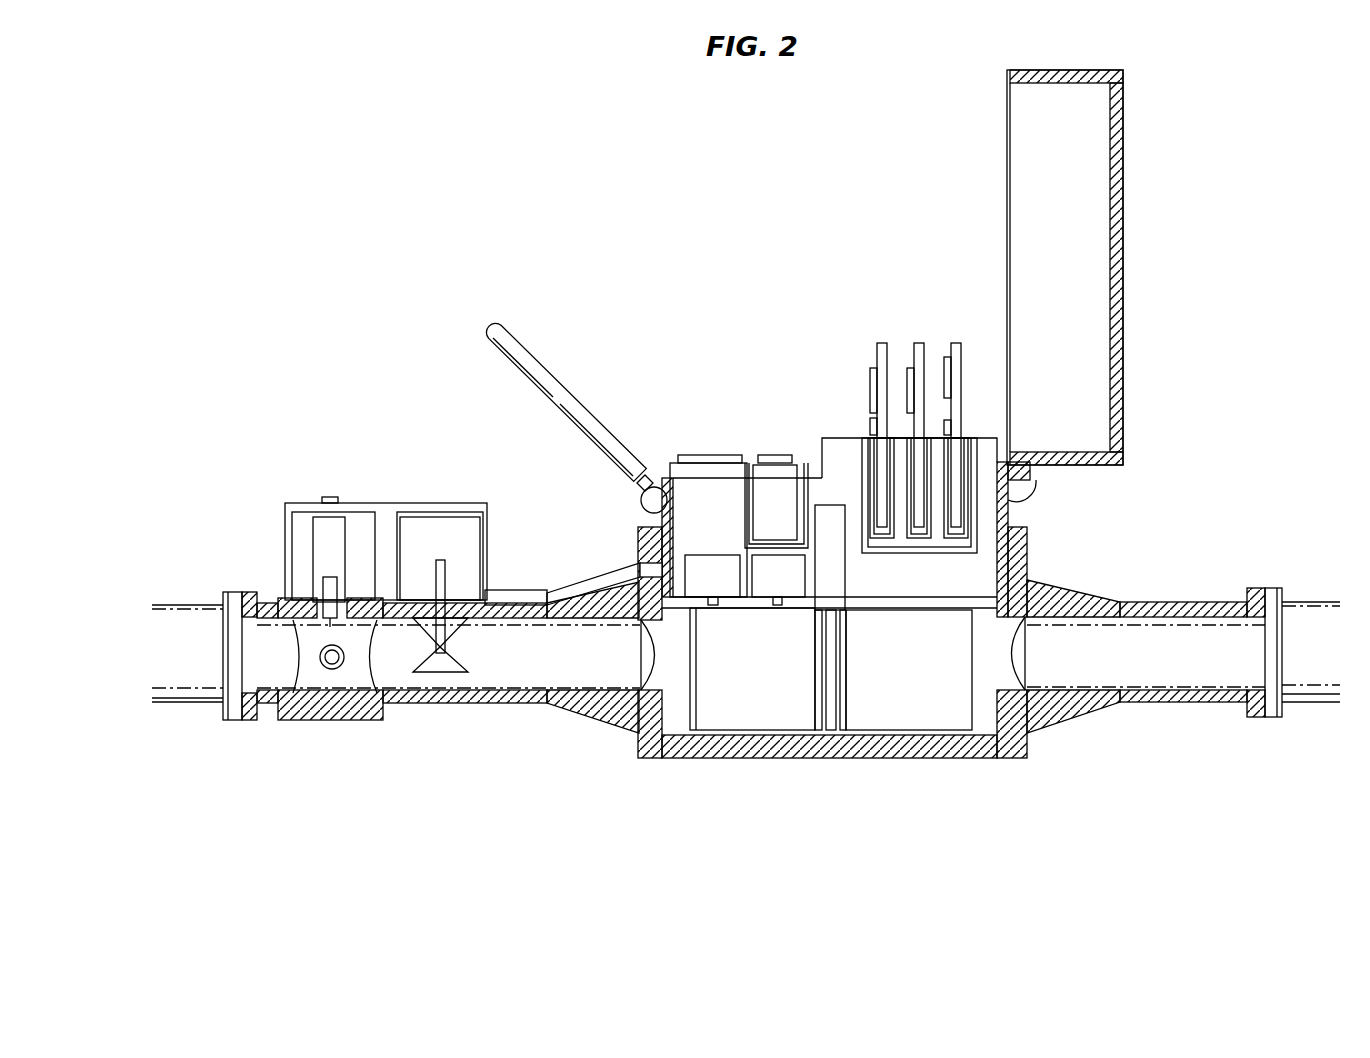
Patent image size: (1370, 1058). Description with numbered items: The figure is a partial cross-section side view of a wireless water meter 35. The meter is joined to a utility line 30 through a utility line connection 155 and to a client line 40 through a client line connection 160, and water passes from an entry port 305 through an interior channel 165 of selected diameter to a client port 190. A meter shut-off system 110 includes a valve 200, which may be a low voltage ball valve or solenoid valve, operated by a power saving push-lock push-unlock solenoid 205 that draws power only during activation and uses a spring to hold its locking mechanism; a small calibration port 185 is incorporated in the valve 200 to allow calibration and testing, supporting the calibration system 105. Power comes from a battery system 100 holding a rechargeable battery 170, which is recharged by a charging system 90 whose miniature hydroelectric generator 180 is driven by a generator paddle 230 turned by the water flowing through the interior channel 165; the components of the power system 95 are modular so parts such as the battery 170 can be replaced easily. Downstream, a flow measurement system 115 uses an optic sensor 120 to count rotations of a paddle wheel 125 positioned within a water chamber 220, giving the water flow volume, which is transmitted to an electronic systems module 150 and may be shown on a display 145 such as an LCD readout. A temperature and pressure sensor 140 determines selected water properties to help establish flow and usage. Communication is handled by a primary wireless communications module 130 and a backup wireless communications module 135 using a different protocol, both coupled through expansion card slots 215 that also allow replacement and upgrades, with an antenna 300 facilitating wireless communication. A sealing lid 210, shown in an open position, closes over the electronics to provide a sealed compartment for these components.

The utility line 30 is at (178, 605).
The wireless water meter 35 is at (652, 240).
The client line 40 is at (1315, 602).
The charging system 90 is at (370, 495).
The power system 95 is at (407, 495).
The battery system 100 is at (752, 452).
The calibration system 105 is at (871, 337).
The meter shut-off system 110 is at (876, 352).
The flow measurement system 115 is at (766, 604).
The optic sensor 120 is at (793, 578).
The paddle wheel 125 is at (908, 708).
The primary wireless communications module 130 is at (919, 343).
The backup wireless communications module 135 is at (957, 343).
The temperature and pressure sensor 140 is at (700, 563).
The display 145 is at (700, 455).
The electronic systems module 150 is at (867, 435).
The utility line connection 155 is at (228, 592).
The client line connection 160 is at (1253, 588).
The interior channel 165 is at (1163, 672).
The battery 170 is at (775, 480).
The generator 180 is at (445, 527).
The calibration port 185 is at (343, 663).
The client port 190 is at (1250, 645).
The valve 200 is at (300, 708).
The push-lock push-unlock solenoid 205 is at (325, 530).
The sealing lid 210 is at (1125, 236).
The expansion card slot 215 is at (965, 425).
The water chamber 220 is at (982, 617).
The generator paddle 230 is at (447, 673).
The antenna 300 is at (563, 395).
The entry port 305 is at (256, 660).